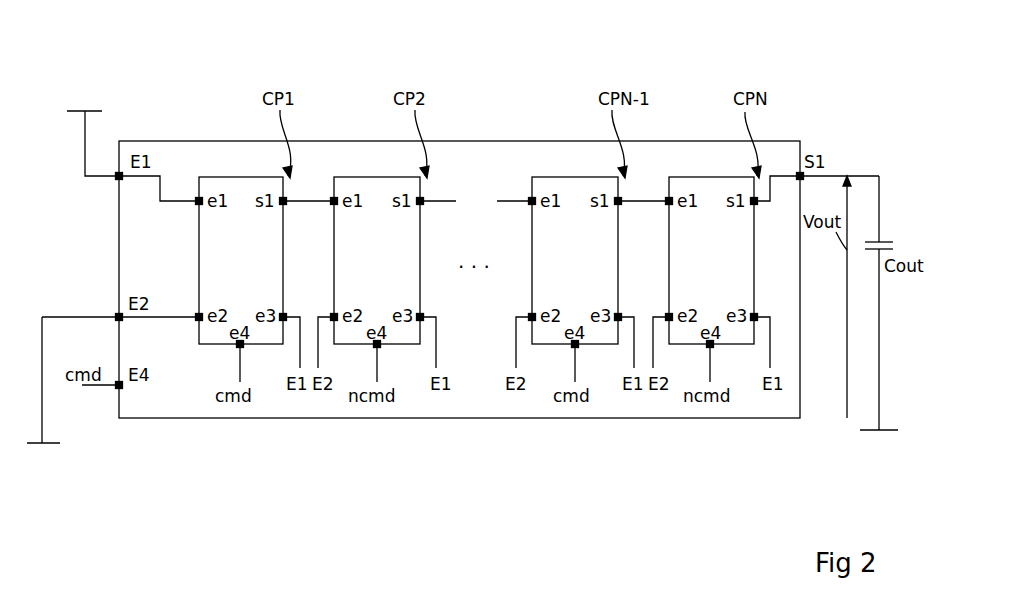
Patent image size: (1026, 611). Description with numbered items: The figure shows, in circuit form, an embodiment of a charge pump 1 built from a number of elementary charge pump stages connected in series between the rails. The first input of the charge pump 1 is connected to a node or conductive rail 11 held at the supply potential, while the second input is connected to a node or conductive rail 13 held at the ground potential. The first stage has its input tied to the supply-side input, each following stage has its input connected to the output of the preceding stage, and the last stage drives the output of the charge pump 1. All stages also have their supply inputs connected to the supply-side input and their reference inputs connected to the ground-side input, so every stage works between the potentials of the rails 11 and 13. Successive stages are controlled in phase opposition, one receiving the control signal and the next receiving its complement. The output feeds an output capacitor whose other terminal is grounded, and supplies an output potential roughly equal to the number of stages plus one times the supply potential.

The charge pump 1 is at (828, 72).
The conductive rail 11 is at (83, 112).
The conductive rail 13 is at (42, 441).